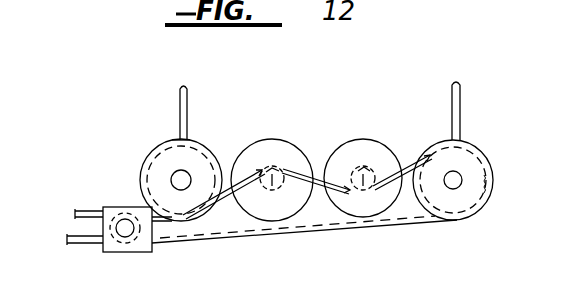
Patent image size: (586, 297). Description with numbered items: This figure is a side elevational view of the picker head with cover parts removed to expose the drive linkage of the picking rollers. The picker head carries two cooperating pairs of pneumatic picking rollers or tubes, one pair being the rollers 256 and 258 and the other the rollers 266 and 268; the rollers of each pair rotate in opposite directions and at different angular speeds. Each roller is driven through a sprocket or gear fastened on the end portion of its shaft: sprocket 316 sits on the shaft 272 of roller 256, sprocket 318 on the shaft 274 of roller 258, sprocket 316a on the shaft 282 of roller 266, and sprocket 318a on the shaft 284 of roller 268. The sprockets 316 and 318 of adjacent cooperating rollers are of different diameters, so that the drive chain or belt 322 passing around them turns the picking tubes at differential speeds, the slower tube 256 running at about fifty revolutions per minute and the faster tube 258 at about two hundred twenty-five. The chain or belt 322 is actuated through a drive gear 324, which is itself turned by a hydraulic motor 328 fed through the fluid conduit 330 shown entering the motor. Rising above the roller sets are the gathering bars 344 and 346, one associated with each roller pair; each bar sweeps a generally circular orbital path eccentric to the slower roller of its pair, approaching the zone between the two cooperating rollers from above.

The roller 256 is at (470, 150).
The roller 258 is at (372, 151).
The roller 266 is at (151, 163).
The roller 268 is at (281, 147).
The shaft 272 is at (453, 184).
The shaft 274 is at (365, 190).
The shaft 282 is at (181, 183).
The shaft 284 is at (271, 190).
The sprocket 316 is at (470, 176).
The sprocket 316a is at (176, 139).
The sprocket 318 is at (359, 168).
The sprocket 318a is at (268, 167).
The drive chain or belt 322 is at (87, 245).
The drive gear 324 is at (135, 243).
The hydraulic motor 328 is at (113, 253).
The fluid conduit 330 is at (99, 210).
The gathering bar 344 is at (461, 115).
The gathering bar 346 is at (188, 96).